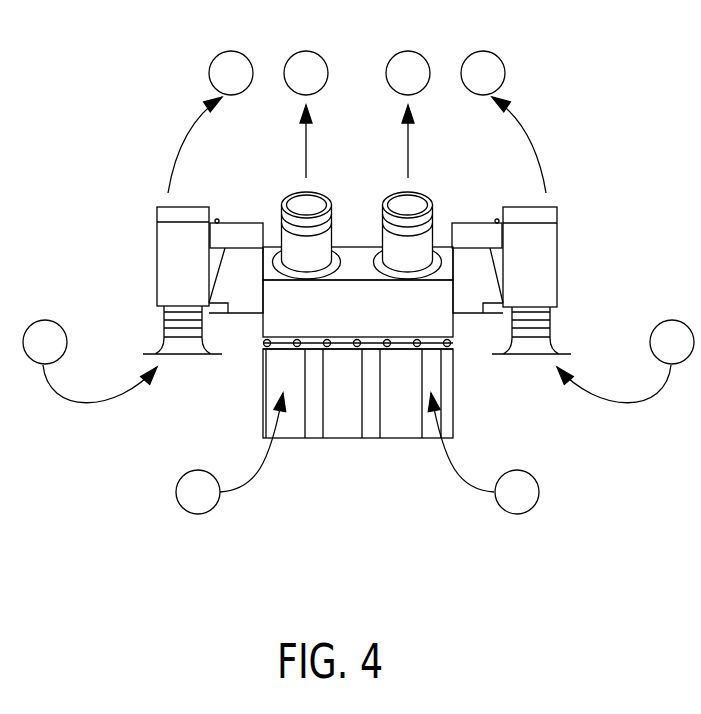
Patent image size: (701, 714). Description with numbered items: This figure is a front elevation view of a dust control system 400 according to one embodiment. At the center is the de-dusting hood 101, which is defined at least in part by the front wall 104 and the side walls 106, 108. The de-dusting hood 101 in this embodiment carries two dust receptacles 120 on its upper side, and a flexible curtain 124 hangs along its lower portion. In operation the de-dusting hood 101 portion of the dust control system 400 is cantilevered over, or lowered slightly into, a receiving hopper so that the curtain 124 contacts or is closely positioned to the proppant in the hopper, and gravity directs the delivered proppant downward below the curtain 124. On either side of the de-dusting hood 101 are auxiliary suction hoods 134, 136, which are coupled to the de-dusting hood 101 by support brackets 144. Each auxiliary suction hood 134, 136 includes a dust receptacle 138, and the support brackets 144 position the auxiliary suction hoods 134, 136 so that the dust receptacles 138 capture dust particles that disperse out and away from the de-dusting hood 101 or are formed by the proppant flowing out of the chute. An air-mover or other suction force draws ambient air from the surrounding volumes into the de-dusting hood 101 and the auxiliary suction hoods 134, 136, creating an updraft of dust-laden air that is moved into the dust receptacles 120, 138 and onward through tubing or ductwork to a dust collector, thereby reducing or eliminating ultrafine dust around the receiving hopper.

The dust control system 400 is at (548, 113).
The de-dusting hood 101 is at (357, 210).
The front wall 104 is at (363, 308).
The side wall 106 is at (257, 325).
The side wall 108 is at (455, 332).
The dust receptacle 120 is at (292, 197).
The curtain 124 is at (337, 432).
The auxiliary suction hood 134 is at (167, 242).
The auxiliary suction hood 136 is at (550, 267).
The dust receptacle 138 is at (158, 348).
The support bracket 144 is at (240, 223).